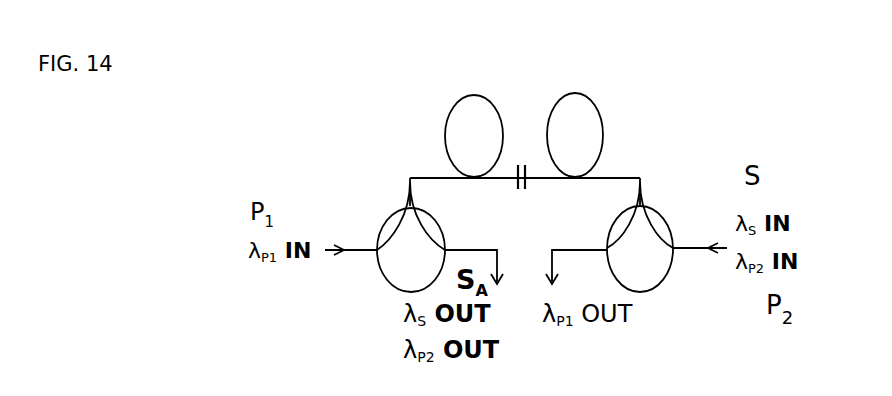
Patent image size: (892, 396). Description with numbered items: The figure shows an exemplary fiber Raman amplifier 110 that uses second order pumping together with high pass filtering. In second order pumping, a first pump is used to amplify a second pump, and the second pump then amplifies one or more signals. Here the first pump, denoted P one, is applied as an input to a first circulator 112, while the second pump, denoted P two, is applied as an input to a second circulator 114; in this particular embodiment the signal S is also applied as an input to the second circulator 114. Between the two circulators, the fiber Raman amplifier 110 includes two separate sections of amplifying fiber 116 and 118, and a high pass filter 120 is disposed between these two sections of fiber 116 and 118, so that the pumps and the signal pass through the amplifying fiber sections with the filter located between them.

The fiber Raman amplifier 110 is at (242, 144).
The first circulator 112 is at (383, 224).
The second circulator 114 is at (663, 222).
The amplifying fiber section 116 is at (597, 120).
The amplifying fiber section 118 is at (451, 124).
The high pass filter 120 is at (518, 160).